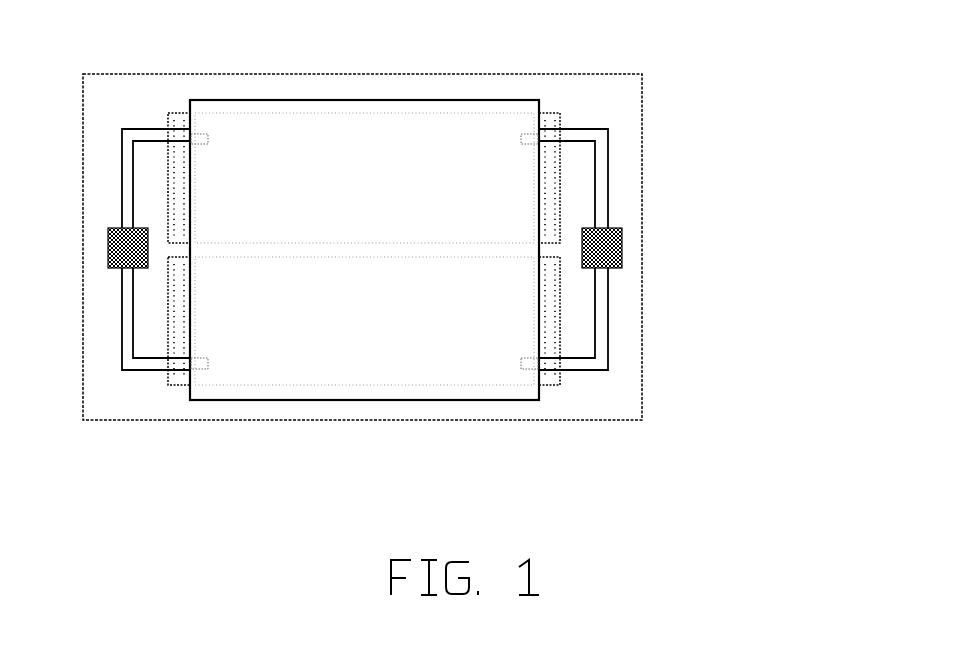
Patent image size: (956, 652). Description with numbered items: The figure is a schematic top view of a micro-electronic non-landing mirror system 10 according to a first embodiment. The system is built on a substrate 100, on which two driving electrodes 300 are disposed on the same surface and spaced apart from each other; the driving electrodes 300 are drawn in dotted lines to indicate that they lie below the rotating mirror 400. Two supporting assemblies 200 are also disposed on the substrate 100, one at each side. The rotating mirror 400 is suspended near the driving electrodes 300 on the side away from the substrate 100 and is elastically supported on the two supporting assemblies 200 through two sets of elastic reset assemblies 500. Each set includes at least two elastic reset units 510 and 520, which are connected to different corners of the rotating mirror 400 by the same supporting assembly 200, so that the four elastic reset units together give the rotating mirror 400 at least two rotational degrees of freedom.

The micro-electronic non-landing mirror system 10 is at (625, 50).
The substrate 100 is at (601, 403).
The supporting assemblies 200 is at (123, 250).
The driving electrodes 300 is at (548, 337).
The rotating mirror 400 is at (413, 343).
The elastic reset assemblies 500 is at (696, 249).
The elastic reset unit 510 is at (601, 308).
The elastic reset unit 520 is at (601, 186).